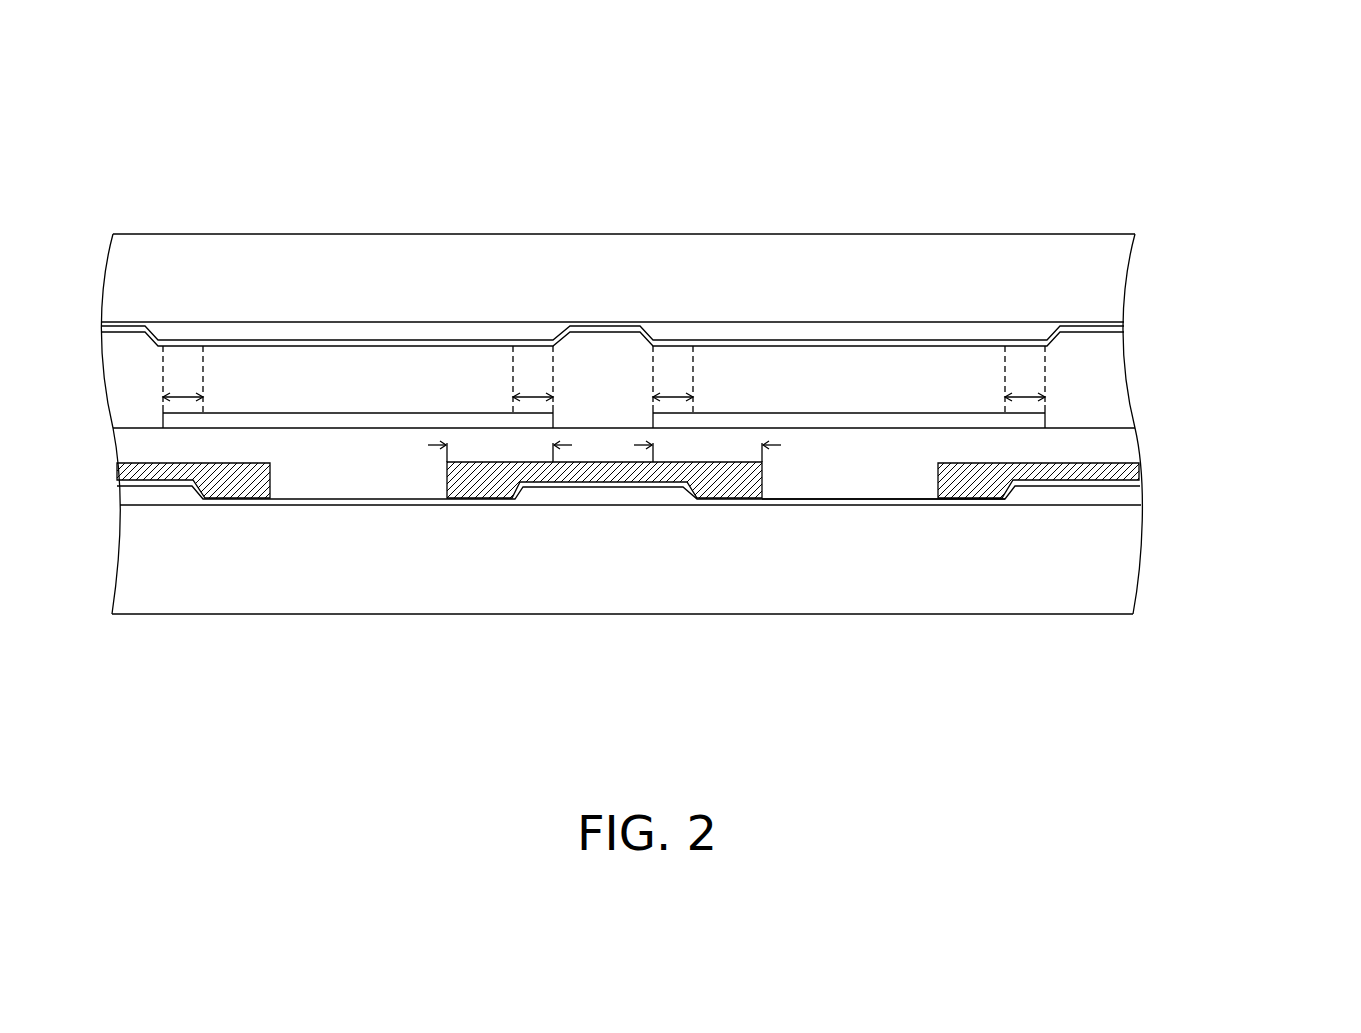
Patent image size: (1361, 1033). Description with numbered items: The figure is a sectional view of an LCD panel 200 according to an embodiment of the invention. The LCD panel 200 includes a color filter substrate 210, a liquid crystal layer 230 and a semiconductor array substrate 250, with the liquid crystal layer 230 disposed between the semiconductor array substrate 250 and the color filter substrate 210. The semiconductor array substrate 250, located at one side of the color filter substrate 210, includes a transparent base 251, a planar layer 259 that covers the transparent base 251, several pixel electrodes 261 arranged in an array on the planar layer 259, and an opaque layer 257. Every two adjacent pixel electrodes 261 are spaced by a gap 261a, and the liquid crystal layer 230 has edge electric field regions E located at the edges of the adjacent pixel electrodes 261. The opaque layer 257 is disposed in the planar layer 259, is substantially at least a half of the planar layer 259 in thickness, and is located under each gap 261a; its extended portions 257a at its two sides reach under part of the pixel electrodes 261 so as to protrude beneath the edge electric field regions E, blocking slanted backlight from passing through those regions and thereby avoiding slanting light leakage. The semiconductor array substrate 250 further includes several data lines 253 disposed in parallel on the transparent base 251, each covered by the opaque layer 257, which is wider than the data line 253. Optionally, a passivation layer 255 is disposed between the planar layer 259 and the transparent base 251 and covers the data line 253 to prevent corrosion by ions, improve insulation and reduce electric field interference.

The LCD panel 200 is at (1357, 86).
The color filter substrate 210 is at (1270, 235).
The liquid crystal layer 230 is at (1115, 373).
The pixel electrode 261 is at (1045, 414).
The gap 261a is at (607, 397).
The semiconductor array substrate 250 is at (1270, 413).
The transparent base 251 is at (1139, 551).
The data line 253 is at (120, 490).
The passivation layer 255 is at (735, 502).
The opaque layer 257 is at (500, 493).
The extended portion 257a is at (604, 447).
The planar layer 259 is at (813, 490).